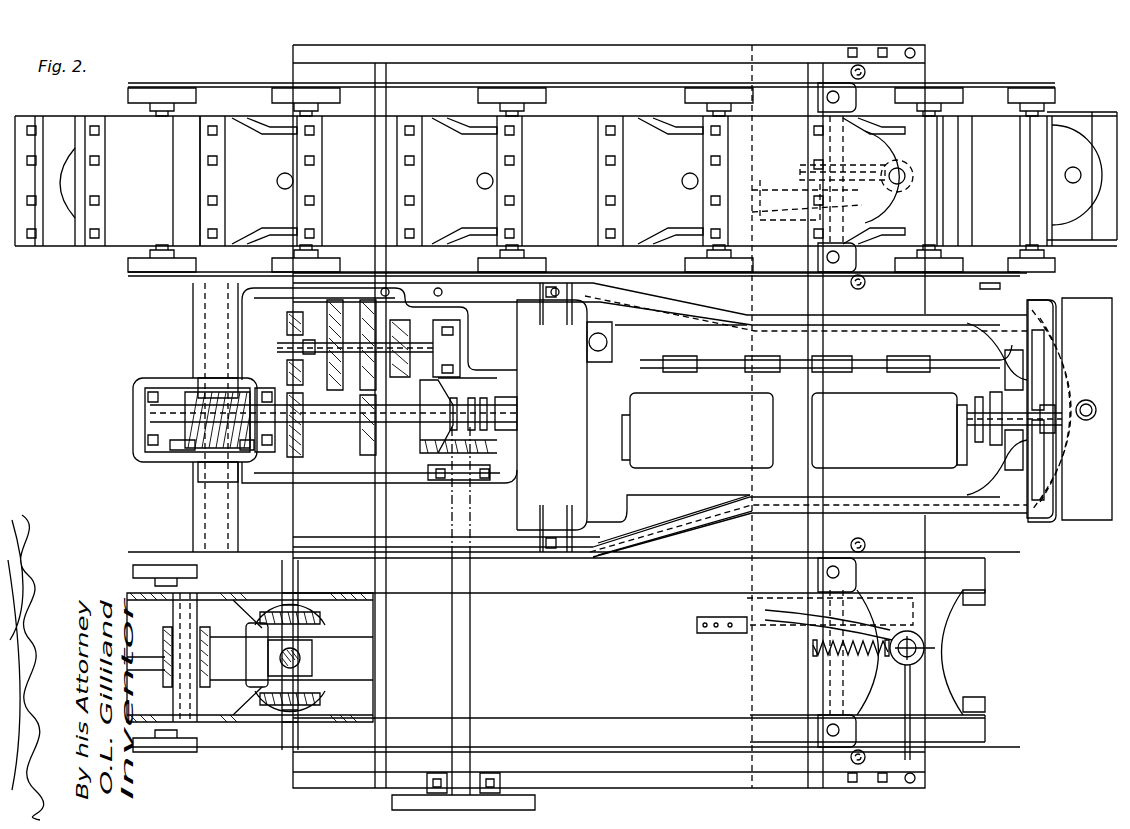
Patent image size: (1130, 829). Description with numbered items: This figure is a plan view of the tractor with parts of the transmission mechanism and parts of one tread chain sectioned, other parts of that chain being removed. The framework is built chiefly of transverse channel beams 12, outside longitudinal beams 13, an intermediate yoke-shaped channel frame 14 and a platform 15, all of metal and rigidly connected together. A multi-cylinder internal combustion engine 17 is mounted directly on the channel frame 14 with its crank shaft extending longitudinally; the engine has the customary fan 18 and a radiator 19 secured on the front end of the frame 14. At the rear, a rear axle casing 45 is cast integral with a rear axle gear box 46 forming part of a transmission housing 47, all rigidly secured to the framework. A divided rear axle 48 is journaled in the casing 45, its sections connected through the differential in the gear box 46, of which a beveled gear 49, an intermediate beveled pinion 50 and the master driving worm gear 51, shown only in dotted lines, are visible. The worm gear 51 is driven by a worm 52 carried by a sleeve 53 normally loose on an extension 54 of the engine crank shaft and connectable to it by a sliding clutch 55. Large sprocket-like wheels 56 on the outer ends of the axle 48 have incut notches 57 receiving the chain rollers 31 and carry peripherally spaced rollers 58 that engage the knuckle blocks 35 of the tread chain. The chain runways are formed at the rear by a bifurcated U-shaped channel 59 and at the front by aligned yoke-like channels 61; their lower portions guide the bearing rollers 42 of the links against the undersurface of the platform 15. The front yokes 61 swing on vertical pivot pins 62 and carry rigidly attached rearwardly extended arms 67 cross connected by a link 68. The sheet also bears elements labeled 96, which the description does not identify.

The transverse channel beams 12 is at (813, 683).
The outside longitudinal beams 13 is at (718, 54).
The intermediate yoke-shaped channel frame 14 is at (998, 500).
The platform 15 is at (903, 303).
The multi-cylinder internal combustion engine 17 is at (714, 452).
The fan 18 is at (1042, 362).
The radiator 19 is at (1084, 507).
The sprocket-engaging rollers 31 is at (181, 668).
The knuckle block 35 is at (304, 662).
The bearing rollers 42 is at (197, 96).
The rear axle casing 45 is at (200, 520).
The rear axle gear box 46 is at (140, 452).
The transmission housing 47 is at (335, 484).
The divided rear axle 48 is at (215, 541).
The opposing beveled gear 49 is at (200, 454).
The intermediate beveled pinion 50 is at (180, 452).
The worm gear 51 is at (160, 414).
The worm 52 is at (205, 410).
The sleeve 53 is at (318, 458).
The crank shaft extension 54 is at (355, 422).
The sliding clutch 55 is at (318, 408).
The sprocket-like wheels 56 is at (228, 708).
The incut notches 57 is at (181, 626).
The peripherally spaced rollers 58 is at (264, 652).
The rear U-shaped channel yoke 59 is at (174, 281).
The front yoke-like channels 61 is at (982, 273).
The vertical pivot pins 62 is at (934, 648).
The rearwardly extended arms 67 is at (792, 640).
The link 68 is at (762, 540).
The frame rod 96 is at (627, 92).